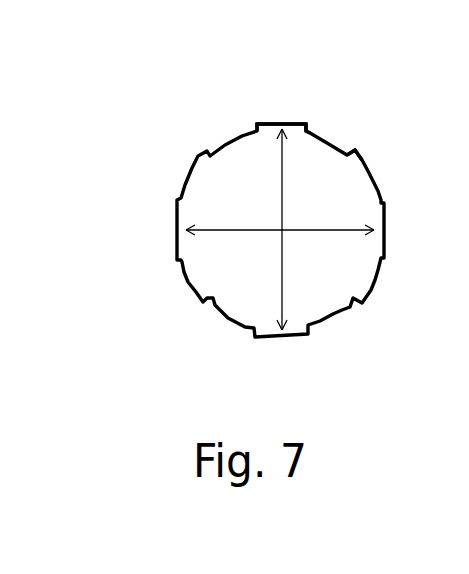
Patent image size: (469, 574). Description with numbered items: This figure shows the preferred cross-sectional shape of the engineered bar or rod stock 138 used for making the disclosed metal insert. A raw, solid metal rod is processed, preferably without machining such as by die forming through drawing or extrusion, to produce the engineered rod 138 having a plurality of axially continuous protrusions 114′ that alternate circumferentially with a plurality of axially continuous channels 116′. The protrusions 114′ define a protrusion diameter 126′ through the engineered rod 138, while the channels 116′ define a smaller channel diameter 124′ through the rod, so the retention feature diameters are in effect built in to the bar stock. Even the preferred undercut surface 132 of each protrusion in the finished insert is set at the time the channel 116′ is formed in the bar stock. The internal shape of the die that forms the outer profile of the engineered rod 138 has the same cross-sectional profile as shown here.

The engineered rod 138 is at (253, 100).
The axially continuous protrusion 114′ is at (410, 73).
The undercut surface 132 is at (308, 129).
The axially continuous channel 116′ is at (340, 146).
The channel diameter 124′ is at (213, 227).
The protrusion diameter 126′ is at (277, 286).